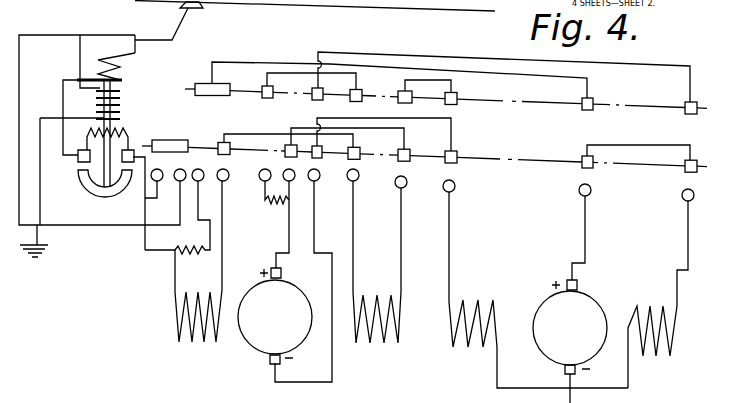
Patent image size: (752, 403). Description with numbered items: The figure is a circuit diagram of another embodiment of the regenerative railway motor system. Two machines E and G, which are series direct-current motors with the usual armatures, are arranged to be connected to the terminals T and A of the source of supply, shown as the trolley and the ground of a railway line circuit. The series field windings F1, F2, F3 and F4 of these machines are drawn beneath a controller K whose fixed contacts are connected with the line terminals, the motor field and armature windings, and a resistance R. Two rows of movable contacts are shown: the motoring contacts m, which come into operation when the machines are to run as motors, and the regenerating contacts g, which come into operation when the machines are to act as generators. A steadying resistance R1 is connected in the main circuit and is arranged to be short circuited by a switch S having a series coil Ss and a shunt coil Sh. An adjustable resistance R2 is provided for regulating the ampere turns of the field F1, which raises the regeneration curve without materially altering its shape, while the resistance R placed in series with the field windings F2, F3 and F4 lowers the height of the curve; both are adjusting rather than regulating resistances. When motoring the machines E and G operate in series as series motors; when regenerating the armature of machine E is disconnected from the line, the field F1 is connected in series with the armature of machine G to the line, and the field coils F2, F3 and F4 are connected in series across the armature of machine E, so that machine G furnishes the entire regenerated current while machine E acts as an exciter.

The trolley terminal T is at (271, 7).
The series coil Ss is at (122, 72).
The shunt coil Sh is at (122, 99).
The steadying resistance R1 is at (122, 129).
The switch S is at (104, 198).
The ground terminal A is at (39, 250).
The adjustable resistance R2 is at (177, 217).
The resistance R is at (277, 204).
The motor E is at (275, 316).
The motor G is at (570, 327).
The series field winding F1 is at (198, 273).
The series field winding F2 is at (377, 279).
The series field winding F3 is at (538, 290).
The series field winding F4 is at (658, 294).
The regenerating contacts g is at (452, 90).
The controller K is at (660, 143).
The motoring contacts m is at (434, 148).